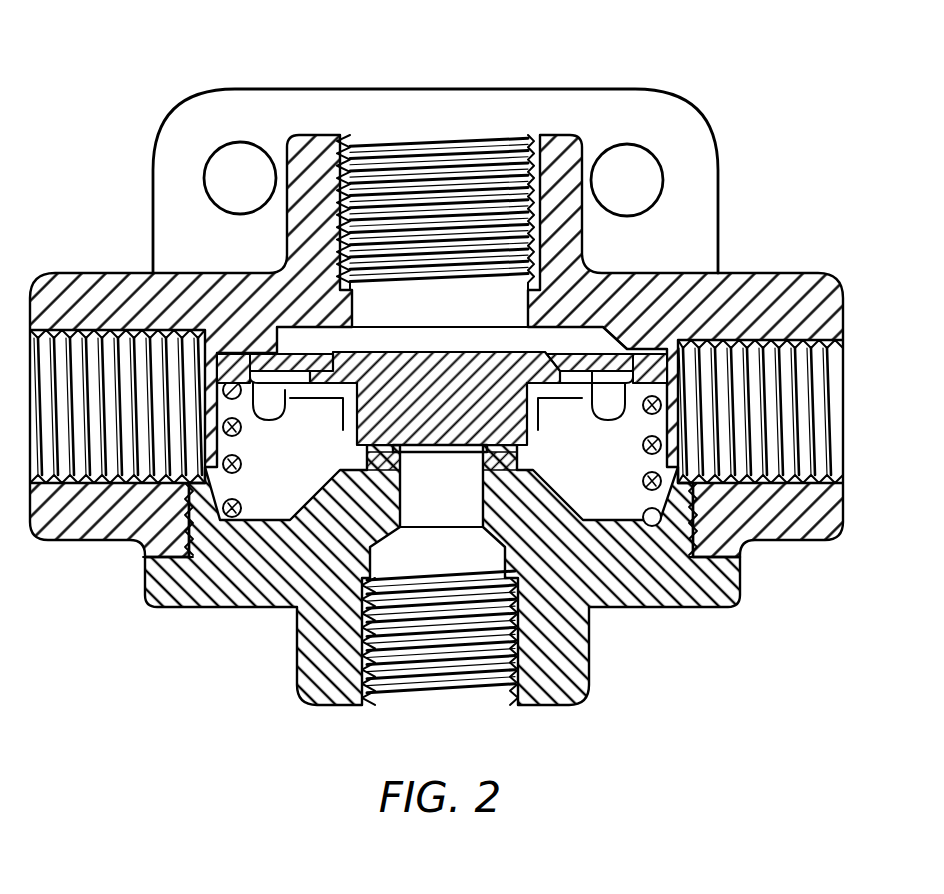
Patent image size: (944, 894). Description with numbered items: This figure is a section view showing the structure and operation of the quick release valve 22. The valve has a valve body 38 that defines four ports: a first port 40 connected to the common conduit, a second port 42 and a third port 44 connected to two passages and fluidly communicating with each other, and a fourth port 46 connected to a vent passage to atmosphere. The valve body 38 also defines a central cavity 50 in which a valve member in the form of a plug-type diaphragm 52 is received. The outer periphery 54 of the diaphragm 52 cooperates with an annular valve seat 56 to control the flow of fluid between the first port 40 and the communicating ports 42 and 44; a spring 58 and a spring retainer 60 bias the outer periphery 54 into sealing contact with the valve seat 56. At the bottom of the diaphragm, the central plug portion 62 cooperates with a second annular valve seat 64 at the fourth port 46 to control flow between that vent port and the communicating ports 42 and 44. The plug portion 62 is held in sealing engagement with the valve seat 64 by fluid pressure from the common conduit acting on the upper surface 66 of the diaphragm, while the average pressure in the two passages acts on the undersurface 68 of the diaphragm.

The valve 22 is at (231, 70).
The valve body 38 is at (703, 590).
The first port 40 is at (378, 135).
The second port 42 is at (847, 470).
The third port 44 is at (28, 490).
The fourth port 46 is at (482, 688).
The central cavity 50 is at (580, 340).
The plug-type diaphragm 52 is at (460, 367).
The outer periphery 54 is at (735, 276).
The annular valve seat 56 is at (222, 350).
The spring 58 is at (233, 512).
The spring retainer 60 is at (283, 420).
The central plug portion 62 is at (463, 452).
The annular valve seat 64 is at (373, 447).
The upper surface 66 is at (373, 350).
The undersurface 68 is at (590, 370).